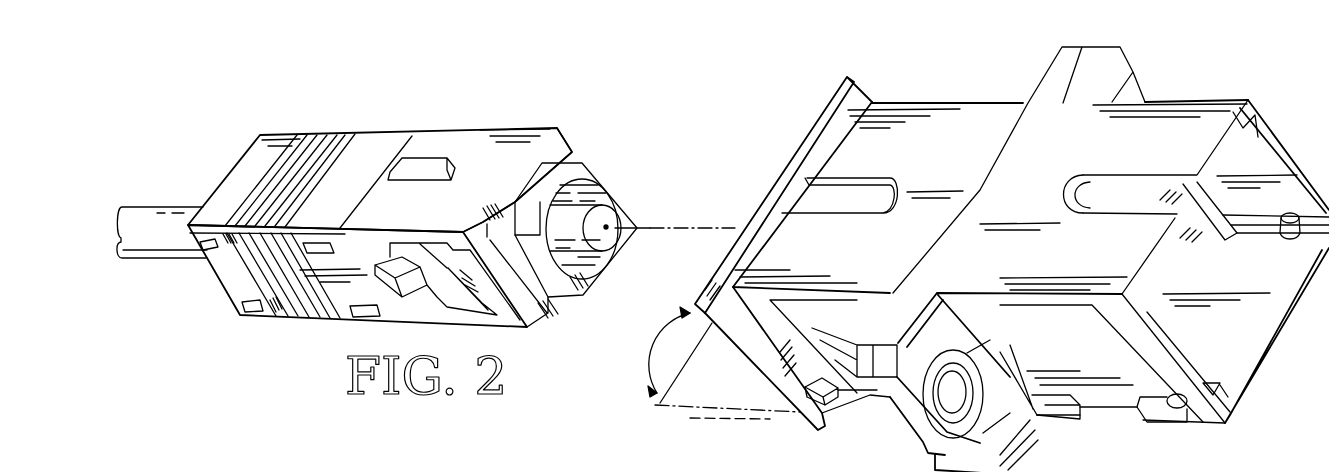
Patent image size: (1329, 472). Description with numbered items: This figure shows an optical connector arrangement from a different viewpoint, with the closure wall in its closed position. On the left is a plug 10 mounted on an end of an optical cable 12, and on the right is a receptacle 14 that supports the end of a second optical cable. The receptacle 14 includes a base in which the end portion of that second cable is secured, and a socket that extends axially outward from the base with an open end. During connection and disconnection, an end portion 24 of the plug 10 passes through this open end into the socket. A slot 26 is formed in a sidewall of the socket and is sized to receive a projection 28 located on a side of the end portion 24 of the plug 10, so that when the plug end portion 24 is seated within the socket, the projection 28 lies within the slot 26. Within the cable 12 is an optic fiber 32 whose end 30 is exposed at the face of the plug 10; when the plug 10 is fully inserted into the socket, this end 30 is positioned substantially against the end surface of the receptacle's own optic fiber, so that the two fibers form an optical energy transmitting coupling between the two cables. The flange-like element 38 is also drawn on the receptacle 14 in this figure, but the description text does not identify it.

The plug 10 is at (347, 128).
The optical cable 12 is at (161, 262).
The receptacle 14 is at (986, 92).
The end portion 24 is at (515, 152).
The slot 26 is at (877, 197).
The projection 28 is at (436, 163).
The end 30 is at (613, 210).
The optic fiber 32 is at (575, 233).
The flange 38 is at (824, 122).